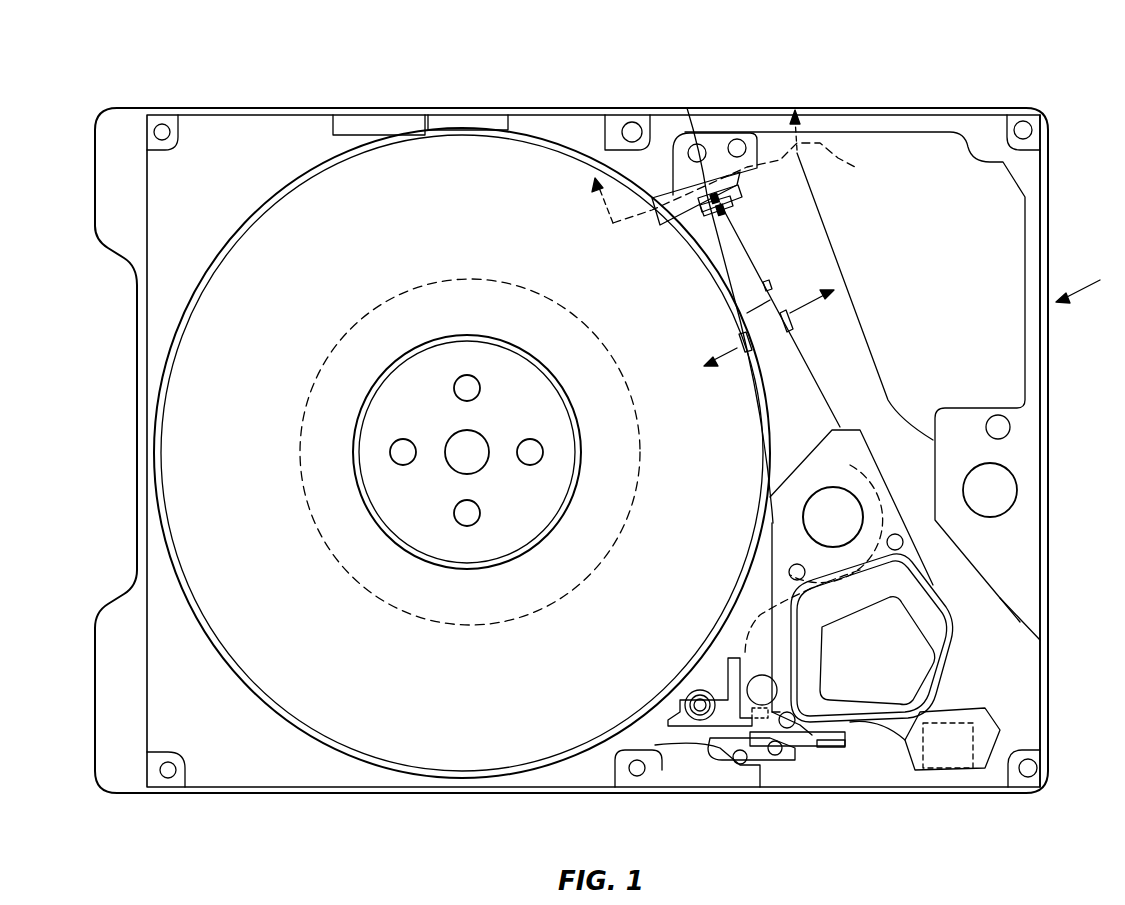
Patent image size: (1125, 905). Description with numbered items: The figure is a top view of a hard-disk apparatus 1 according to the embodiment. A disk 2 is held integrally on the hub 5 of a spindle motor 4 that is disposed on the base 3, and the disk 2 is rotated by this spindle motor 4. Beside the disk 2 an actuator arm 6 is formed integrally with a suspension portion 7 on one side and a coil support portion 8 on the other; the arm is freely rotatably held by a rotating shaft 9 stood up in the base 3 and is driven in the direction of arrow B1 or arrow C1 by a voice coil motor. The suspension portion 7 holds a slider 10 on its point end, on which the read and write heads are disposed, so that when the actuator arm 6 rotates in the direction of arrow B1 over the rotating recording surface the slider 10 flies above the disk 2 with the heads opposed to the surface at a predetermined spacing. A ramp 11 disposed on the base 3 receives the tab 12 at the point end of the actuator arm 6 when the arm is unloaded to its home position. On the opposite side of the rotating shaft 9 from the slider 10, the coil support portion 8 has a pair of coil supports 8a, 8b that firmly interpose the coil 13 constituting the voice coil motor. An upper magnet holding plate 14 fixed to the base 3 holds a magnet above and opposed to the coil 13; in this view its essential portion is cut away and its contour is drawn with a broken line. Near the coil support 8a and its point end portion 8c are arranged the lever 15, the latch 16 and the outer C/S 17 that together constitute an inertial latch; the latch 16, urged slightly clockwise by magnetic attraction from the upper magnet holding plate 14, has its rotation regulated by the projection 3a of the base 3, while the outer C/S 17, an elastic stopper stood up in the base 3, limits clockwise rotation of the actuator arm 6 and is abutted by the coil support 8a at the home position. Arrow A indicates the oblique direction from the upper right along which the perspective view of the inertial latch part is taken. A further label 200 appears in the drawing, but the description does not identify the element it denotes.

The hard-disk apparatus 1 is at (259, 66).
The disk 2 is at (372, 731).
The base 3 is at (165, 720).
The projection 3a is at (836, 782).
The spindle motor 4 is at (300, 445).
The hub 5 is at (472, 542).
The actuator arm 6 is at (801, 346).
The suspension portion 7 is at (752, 301).
The coil support portion 8 is at (797, 478).
The coil support 8a is at (780, 623).
The coil support 8b is at (950, 655).
The point end portion 8c is at (812, 750).
The rotating shaft 9 is at (807, 527).
The slider 10 is at (728, 205).
The ramp 11 is at (683, 140).
The tab 12 is at (757, 168).
The coil 13 is at (1010, 700).
The upper magnet holding plate 14 is at (1020, 570).
The lever 15 is at (892, 762).
The latch 16 is at (745, 763).
The outer C/S 17 is at (756, 680).
The ramp 200 is at (751, 183).
The arrow A is at (1089, 284).
The arrow B1 is at (700, 369).
The arrow C1 is at (836, 289).